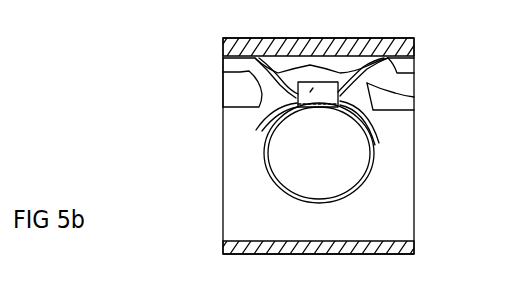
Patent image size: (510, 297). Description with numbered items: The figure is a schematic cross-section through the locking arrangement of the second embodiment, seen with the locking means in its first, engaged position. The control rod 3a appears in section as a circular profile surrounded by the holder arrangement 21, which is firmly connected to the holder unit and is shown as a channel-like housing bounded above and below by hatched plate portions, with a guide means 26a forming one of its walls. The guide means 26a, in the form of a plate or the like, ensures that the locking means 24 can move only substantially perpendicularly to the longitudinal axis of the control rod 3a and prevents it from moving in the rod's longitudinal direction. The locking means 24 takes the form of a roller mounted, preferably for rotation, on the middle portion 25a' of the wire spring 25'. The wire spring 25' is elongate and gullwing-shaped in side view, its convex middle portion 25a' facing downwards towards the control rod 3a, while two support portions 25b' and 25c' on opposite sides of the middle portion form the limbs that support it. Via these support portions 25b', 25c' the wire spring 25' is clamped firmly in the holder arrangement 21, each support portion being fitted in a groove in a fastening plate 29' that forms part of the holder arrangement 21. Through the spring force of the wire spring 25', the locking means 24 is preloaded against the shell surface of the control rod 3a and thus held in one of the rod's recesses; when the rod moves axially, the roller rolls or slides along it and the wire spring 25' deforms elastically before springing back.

The holder arrangement 21 is at (414, 44).
The support portion 25b' is at (193, 89).
The support portion 25c' is at (365, 77).
The wire spring 25' is at (400, 114).
The fastening plate 29' is at (187, 102).
The middle portion 25a' is at (260, 101).
The locking means 24 is at (322, 102).
The guide means 26a is at (402, 173).
The control rod 3a is at (337, 188).